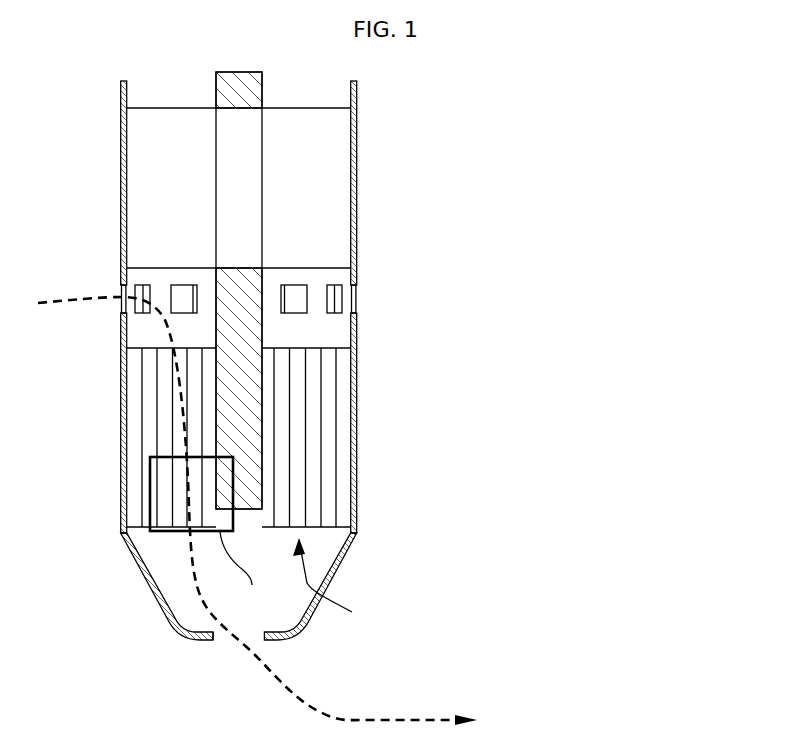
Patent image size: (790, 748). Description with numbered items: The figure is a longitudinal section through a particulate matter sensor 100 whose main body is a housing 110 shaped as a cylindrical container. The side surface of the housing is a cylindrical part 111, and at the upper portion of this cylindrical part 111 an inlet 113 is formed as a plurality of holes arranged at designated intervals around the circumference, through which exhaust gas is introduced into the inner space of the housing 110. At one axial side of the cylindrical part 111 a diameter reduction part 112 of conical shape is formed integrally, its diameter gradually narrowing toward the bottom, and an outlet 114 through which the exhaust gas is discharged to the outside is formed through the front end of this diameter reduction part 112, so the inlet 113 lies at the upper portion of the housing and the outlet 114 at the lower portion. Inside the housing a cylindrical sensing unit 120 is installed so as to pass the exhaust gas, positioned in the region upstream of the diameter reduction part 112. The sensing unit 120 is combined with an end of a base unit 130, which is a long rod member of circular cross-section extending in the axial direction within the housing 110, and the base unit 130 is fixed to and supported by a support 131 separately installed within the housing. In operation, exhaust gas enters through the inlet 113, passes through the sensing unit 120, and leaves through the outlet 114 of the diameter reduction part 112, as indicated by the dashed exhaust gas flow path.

The particulate matter sensor 100 is at (385, 402).
The housing 110 is at (335, 360).
The cylindrical part 111 is at (355, 463).
The diameter reduction part 112 is at (342, 560).
The inlet 113 is at (120, 292).
The outlet 114 is at (215, 638).
The sensing unit 120 is at (334, 586).
The base unit 130 is at (248, 398).
The support 131 is at (333, 173).